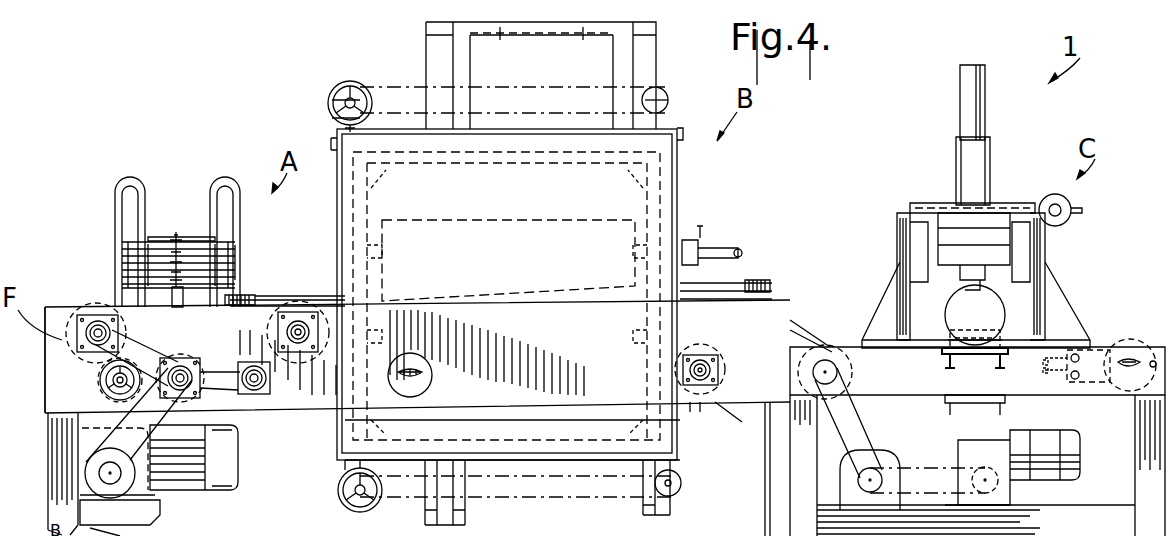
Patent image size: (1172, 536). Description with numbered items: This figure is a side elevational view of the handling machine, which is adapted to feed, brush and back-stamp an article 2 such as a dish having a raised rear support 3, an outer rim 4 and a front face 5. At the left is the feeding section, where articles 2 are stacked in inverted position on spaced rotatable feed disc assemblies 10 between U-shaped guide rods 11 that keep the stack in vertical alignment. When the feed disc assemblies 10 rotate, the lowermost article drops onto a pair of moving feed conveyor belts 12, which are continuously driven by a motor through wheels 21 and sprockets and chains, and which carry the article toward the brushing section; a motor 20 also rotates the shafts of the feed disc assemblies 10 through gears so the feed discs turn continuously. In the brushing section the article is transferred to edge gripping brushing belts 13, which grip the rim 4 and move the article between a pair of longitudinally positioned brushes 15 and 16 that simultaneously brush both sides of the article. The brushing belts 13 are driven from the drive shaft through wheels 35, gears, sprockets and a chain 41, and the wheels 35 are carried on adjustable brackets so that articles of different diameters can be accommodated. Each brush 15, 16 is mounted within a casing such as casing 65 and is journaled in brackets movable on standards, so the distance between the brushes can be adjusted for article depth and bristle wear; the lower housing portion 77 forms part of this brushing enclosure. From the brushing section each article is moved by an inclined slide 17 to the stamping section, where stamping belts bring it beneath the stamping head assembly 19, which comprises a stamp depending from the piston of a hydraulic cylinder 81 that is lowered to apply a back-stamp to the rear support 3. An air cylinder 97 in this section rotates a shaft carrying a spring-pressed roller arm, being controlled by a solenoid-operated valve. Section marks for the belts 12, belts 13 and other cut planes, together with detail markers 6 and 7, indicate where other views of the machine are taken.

The article 2 is at (225, 243).
The raised rear support 3 is at (160, 237).
The outer rim 4 is at (238, 252).
The front face 5 is at (95, 294).
The idler pulleys 6 is at (100, 350).
The feed screw 7 is at (220, 288).
The feed disc assemblies 10 is at (186, 288).
The U-shaped guide rods 11 is at (131, 179).
The feed conveyor belts 12 is at (118, 305).
The edge gripping brushing belt 13 is at (310, 300).
The brush 15 is at (472, 231).
The brush 16 is at (485, 372).
The inclined slide 17 is at (815, 335).
The stamping head assembly 19 is at (999, 283).
The motor 20 is at (192, 482).
The wheels 21 is at (126, 333).
The wheels 35 is at (262, 302).
The chain 41 is at (246, 366).
The casing 65 is at (342, 231).
The lower housing frame 77 is at (342, 447).
The hydraulic cylinder 81 is at (964, 99).
The air cylinder 97 is at (968, 167).